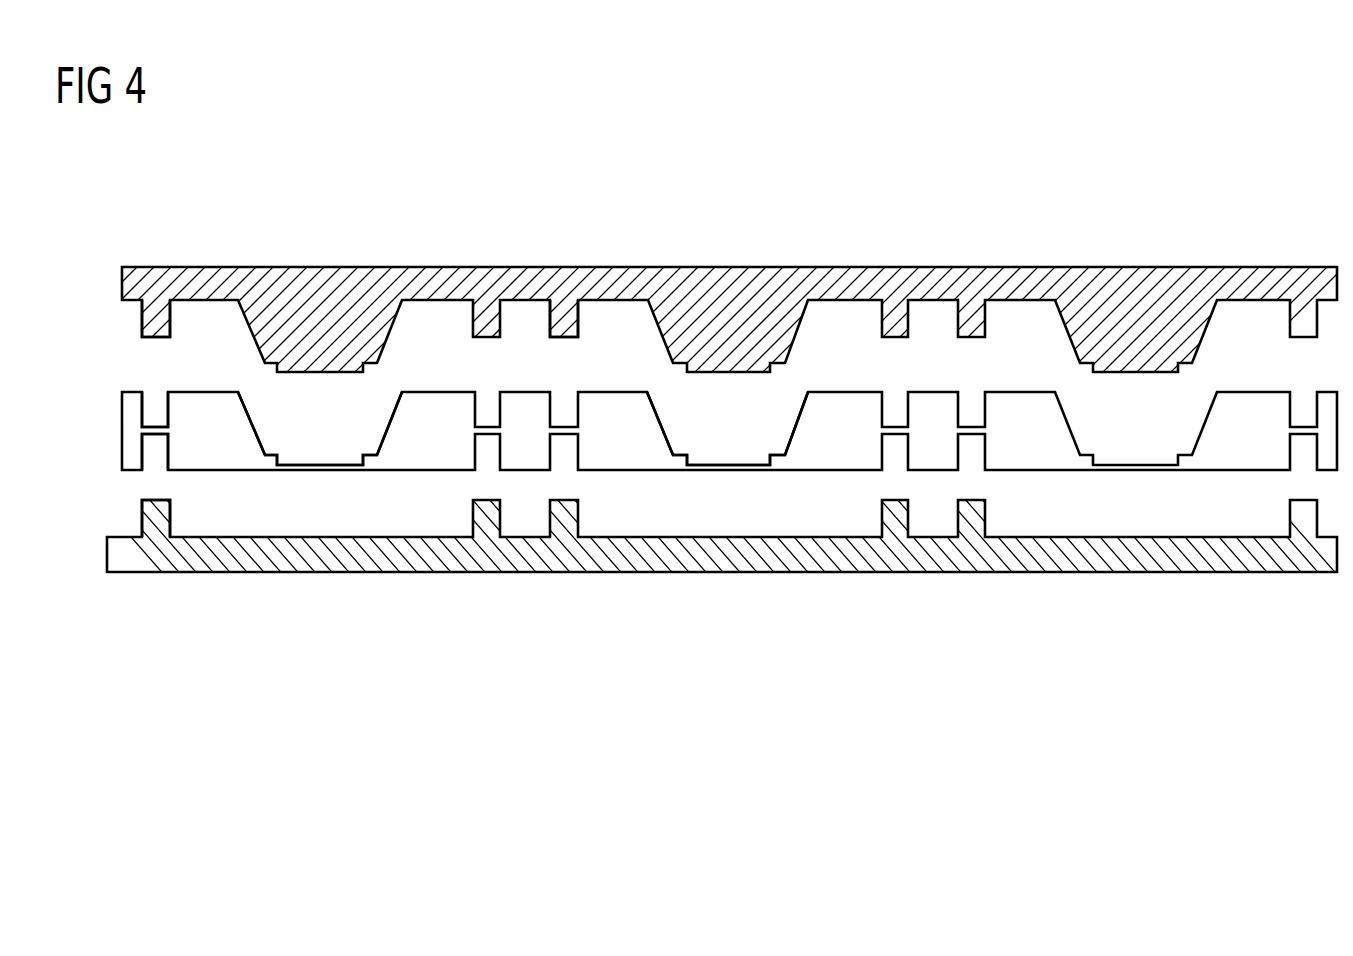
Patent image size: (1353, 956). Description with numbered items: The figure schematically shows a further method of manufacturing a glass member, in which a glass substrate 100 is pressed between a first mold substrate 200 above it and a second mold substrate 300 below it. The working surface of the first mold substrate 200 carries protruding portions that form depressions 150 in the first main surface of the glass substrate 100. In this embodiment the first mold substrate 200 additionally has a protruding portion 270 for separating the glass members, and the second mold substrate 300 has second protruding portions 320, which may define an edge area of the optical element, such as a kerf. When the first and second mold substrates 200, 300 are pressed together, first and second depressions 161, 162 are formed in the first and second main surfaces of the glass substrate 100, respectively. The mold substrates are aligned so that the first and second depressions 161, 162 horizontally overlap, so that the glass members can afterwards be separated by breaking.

The glass substrate 100 is at (417, 452).
The depressions 150 is at (344, 443).
The first depressions 161 is at (157, 405).
The second depressions 162 is at (155, 460).
The first mold substrate 200 is at (345, 282).
The protruding portion 270 is at (152, 322).
The second mold substrate 300 is at (682, 555).
The second protruding portions 320 is at (157, 518).